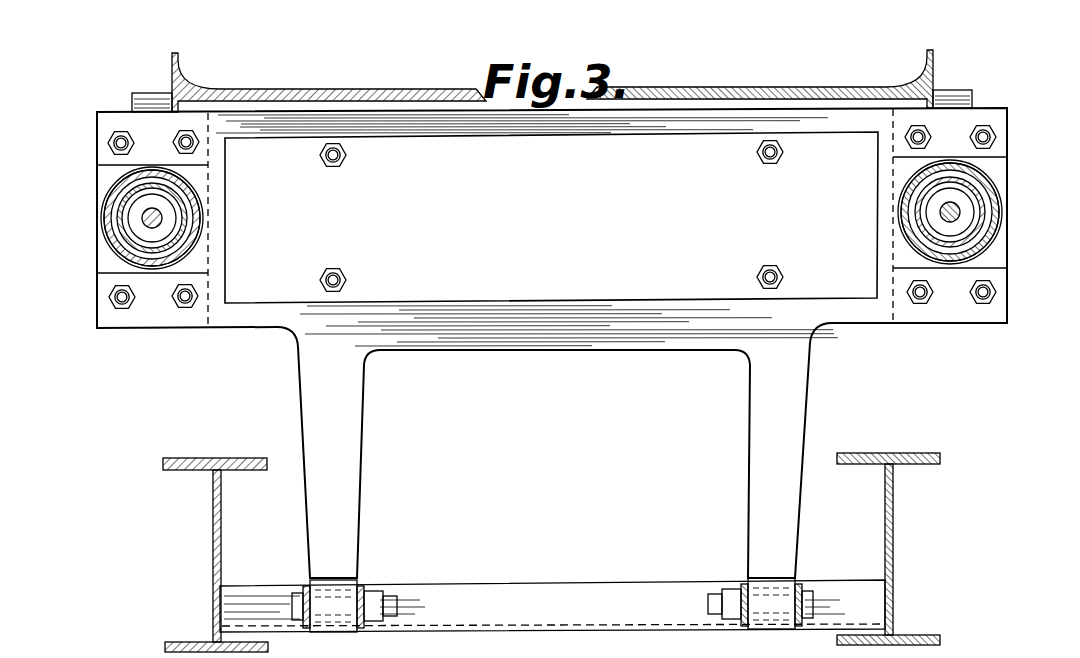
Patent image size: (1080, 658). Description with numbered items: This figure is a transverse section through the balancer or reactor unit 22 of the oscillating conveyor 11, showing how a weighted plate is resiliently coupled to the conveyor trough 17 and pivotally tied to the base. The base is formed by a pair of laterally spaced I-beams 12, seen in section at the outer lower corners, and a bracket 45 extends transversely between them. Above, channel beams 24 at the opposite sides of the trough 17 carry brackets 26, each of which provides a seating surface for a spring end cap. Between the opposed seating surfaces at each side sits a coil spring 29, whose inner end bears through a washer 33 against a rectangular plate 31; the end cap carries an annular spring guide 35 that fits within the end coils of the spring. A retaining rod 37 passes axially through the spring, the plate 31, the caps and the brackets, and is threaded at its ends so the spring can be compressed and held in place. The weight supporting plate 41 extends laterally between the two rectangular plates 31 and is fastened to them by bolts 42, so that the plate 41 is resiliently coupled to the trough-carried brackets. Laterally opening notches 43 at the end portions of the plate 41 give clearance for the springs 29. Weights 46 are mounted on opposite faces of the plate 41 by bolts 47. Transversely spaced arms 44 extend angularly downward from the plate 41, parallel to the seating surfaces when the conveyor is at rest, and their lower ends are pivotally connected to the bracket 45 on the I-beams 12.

The oscillating conveyor 11 is at (216, 457).
The I-beams 12 is at (213, 548).
The conveyor trough 17 is at (200, 88).
The reactor unit 22 is at (366, 452).
The channel beams 24 is at (172, 76).
The brackets 26 is at (138, 100).
The coil spring 29 is at (105, 232).
The rectangular plate 31 is at (100, 178).
The washers 33 is at (105, 245).
The annular spring guides 35 is at (105, 210).
The retaining rod 37 is at (160, 222).
The weight supporting plate 41 is at (601, 352).
The bolts 42 is at (107, 147).
The notches 43 is at (108, 272).
The arms 44 is at (360, 510).
The bracket 45 is at (513, 586).
The weights 46 is at (676, 133).
The bolts 47 is at (323, 162).